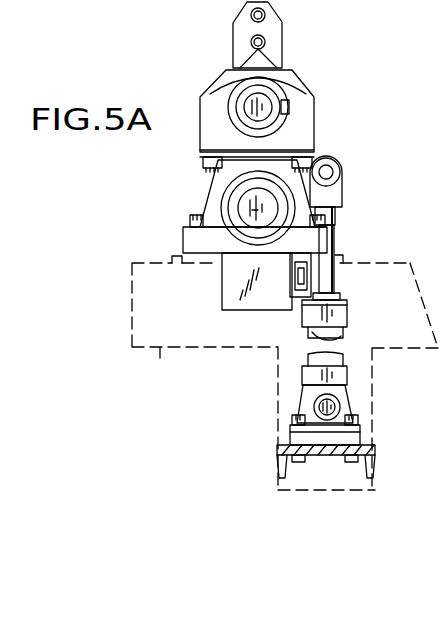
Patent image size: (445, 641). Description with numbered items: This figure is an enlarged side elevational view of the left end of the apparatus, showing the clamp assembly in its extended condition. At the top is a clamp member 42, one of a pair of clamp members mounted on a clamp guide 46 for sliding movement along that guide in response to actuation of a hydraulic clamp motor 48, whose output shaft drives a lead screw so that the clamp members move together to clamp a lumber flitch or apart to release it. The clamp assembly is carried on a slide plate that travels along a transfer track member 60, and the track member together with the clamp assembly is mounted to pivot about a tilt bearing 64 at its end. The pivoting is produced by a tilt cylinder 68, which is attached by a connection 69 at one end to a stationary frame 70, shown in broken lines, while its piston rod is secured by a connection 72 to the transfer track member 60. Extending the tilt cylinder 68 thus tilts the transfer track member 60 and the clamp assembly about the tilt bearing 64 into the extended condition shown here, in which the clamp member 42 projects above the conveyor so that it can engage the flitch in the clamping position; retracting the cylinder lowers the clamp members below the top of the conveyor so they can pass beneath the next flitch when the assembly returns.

The clamp member 42 is at (237, 13).
The clamp guide 46 is at (260, 64).
The hydraulic clamp motor 48 is at (272, 95).
The connection 72 is at (327, 172).
The tilt bearing 64 is at (252, 210).
The transfer track member 60 is at (222, 283).
The tilt cylinder 68 is at (303, 332).
The connection 69 is at (320, 408).
The stationary frame 70 is at (158, 358).